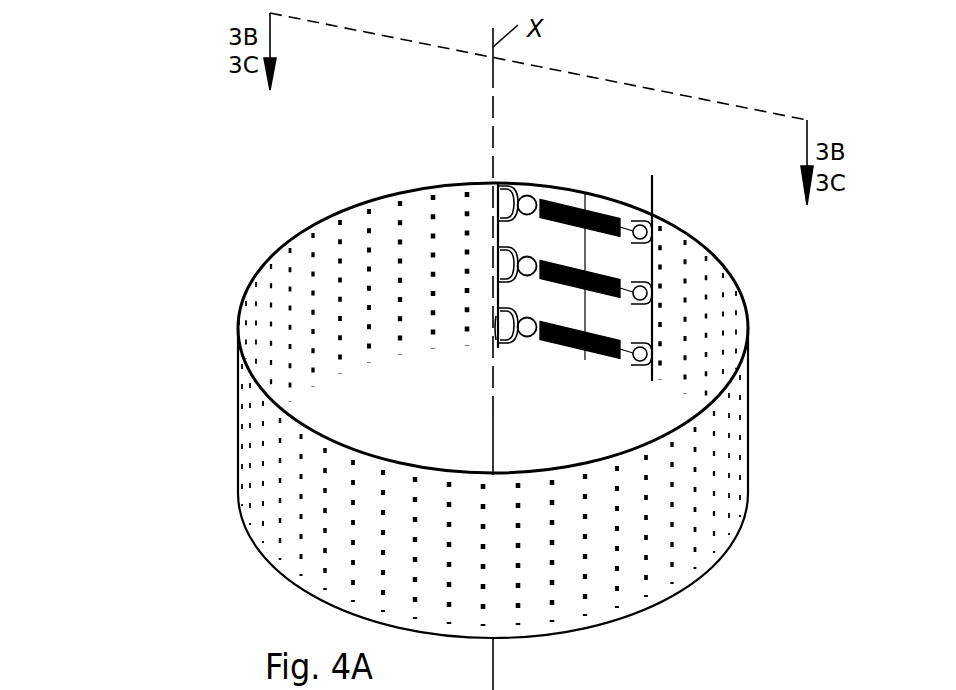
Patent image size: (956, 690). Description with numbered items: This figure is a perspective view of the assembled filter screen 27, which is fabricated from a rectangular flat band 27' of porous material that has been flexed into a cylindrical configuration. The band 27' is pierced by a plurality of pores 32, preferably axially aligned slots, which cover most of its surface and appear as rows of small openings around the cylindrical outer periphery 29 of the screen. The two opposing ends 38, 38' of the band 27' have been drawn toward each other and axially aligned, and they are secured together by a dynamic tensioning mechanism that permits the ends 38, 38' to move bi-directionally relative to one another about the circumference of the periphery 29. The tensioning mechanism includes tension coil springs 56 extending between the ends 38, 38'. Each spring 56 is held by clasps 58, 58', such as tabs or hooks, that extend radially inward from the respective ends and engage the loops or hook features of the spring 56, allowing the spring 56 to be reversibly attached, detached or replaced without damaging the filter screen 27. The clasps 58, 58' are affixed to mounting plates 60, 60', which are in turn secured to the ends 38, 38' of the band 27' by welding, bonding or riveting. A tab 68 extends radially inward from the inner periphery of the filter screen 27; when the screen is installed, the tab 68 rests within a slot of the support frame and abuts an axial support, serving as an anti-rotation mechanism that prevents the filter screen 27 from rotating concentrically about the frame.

The filter screen 27 is at (412, 408).
The band 27' is at (785, 410).
The outer periphery 29 is at (237, 422).
The pores 32 is at (650, 532).
The end 38 is at (575, 205).
The end 38' is at (586, 236).
The spring 56 is at (622, 322).
The clasp 58 is at (477, 248).
The clasp 58' is at (684, 272).
The mounting plate 60 is at (418, 254).
The mounting plate 60' is at (719, 309).
The tab 68 is at (497, 329).